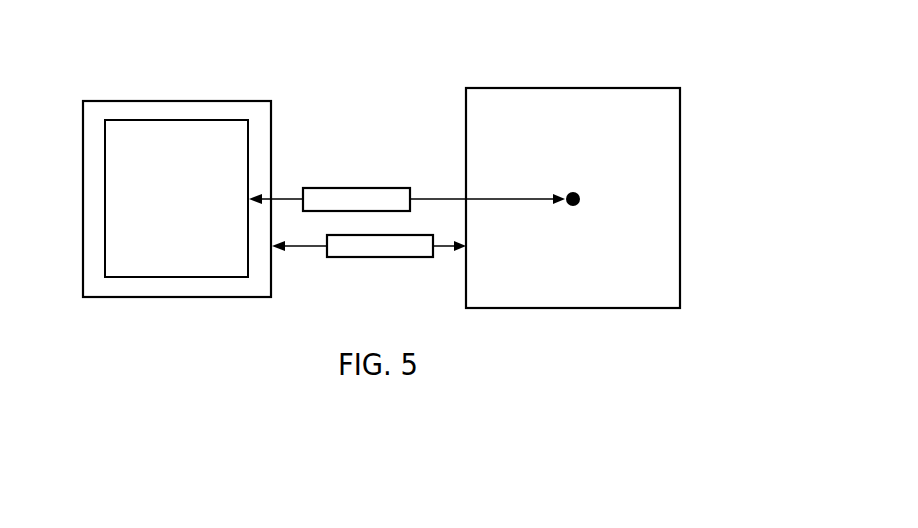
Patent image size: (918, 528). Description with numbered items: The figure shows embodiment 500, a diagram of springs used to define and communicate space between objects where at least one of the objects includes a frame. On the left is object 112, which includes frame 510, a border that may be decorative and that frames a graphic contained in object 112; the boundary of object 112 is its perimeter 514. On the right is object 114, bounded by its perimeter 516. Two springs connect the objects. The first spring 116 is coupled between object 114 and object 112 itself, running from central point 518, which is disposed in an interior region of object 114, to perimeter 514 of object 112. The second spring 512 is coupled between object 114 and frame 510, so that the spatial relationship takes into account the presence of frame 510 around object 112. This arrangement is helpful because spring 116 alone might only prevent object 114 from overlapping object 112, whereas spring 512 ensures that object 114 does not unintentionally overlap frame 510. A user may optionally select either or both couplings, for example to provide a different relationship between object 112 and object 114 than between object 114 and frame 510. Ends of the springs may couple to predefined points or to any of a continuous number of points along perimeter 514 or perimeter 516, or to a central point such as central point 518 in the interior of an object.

The embodiment 500 is at (750, 82).
The frame 510 is at (271, 117).
The object 112 is at (215, 120).
The perimeter 514 is at (105, 240).
The object 114 is at (647, 88).
The perimeter 516 is at (680, 220).
The spring 116 is at (383, 188).
The central point 518 is at (580, 198).
The spring 512 is at (353, 258).